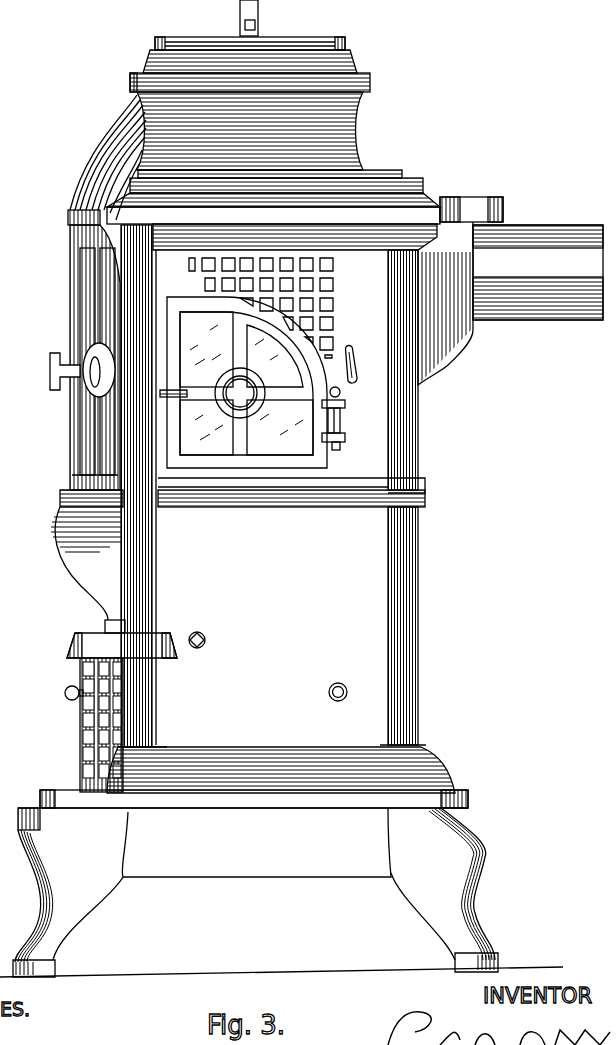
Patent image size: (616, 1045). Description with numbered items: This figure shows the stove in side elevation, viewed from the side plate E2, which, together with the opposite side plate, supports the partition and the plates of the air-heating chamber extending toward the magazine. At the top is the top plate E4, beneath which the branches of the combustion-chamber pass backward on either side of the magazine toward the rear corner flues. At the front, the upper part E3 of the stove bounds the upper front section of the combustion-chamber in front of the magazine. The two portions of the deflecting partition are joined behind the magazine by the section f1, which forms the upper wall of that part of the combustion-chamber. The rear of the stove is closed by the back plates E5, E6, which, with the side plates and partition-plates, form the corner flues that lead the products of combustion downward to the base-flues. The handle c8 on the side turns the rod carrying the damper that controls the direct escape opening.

The top plate E4 is at (273, 103).
The upper part of the front of the stove E3 is at (72, 222).
The connecting section of partition f1 is at (337, 287).
The damper handle c8 is at (352, 363).
The side plate E2 is at (346, 425).
The back plate E6 is at (418, 422).
The back plate E5 is at (419, 626).